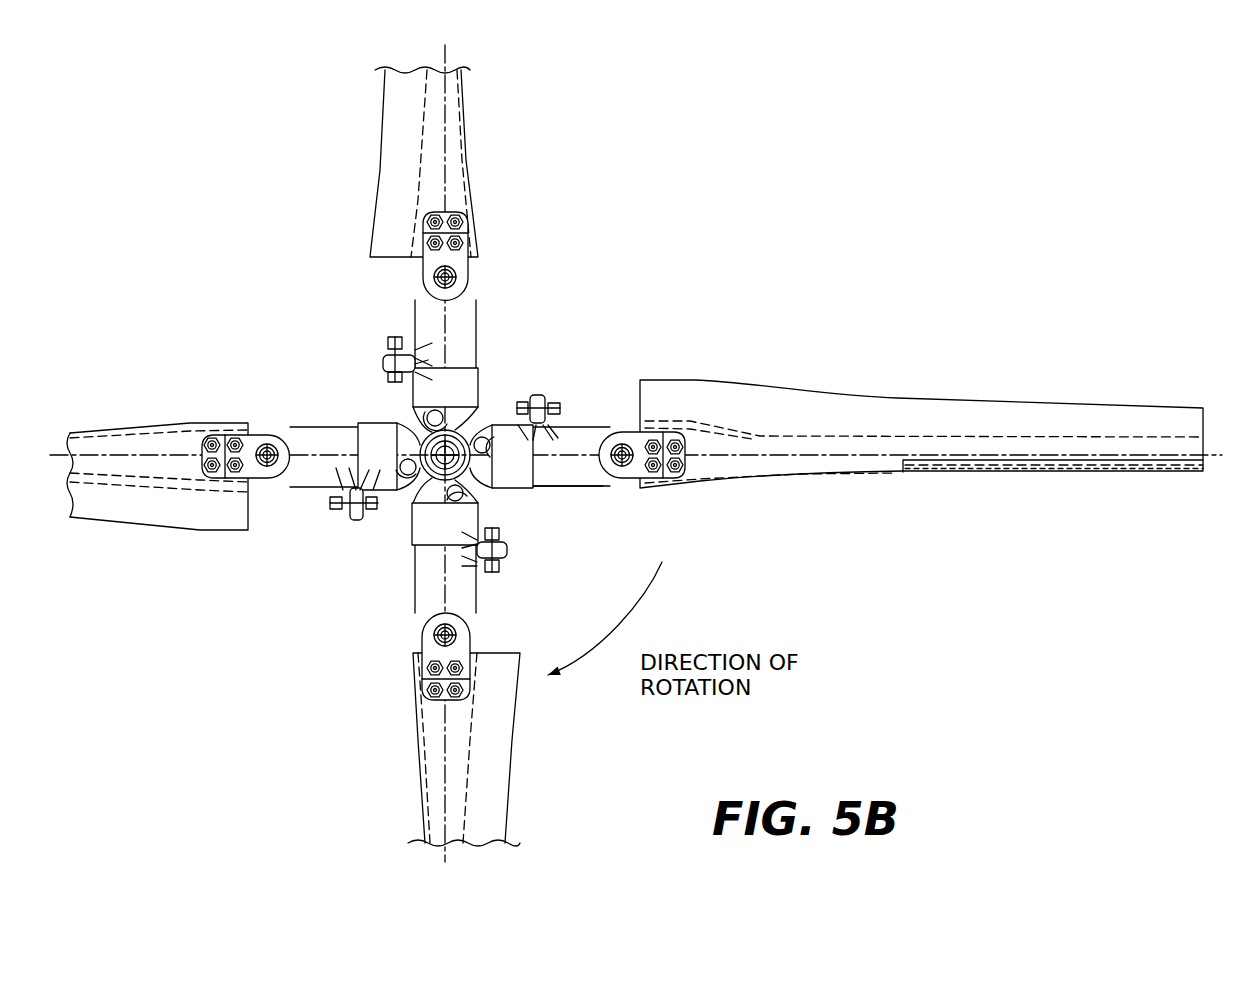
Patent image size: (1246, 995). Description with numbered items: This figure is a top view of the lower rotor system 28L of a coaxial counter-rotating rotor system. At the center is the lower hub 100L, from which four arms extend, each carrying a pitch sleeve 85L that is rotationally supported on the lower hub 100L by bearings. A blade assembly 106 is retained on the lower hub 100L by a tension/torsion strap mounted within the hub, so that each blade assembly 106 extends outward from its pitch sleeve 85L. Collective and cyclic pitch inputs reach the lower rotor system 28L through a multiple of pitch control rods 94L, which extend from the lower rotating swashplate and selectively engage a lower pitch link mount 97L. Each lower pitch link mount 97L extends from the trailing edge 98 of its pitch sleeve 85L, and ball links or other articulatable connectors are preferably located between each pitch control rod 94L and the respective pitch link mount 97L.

The lower rotor system 28L is at (878, 262).
The blade assembly 106 is at (926, 417).
The pitch control rod 94L is at (538, 396).
The lower pitch link mount 97L is at (553, 403).
The trailing edge 98 is at (582, 427).
The pitch sleeve 85L is at (562, 478).
The lower hub 100L is at (420, 485).